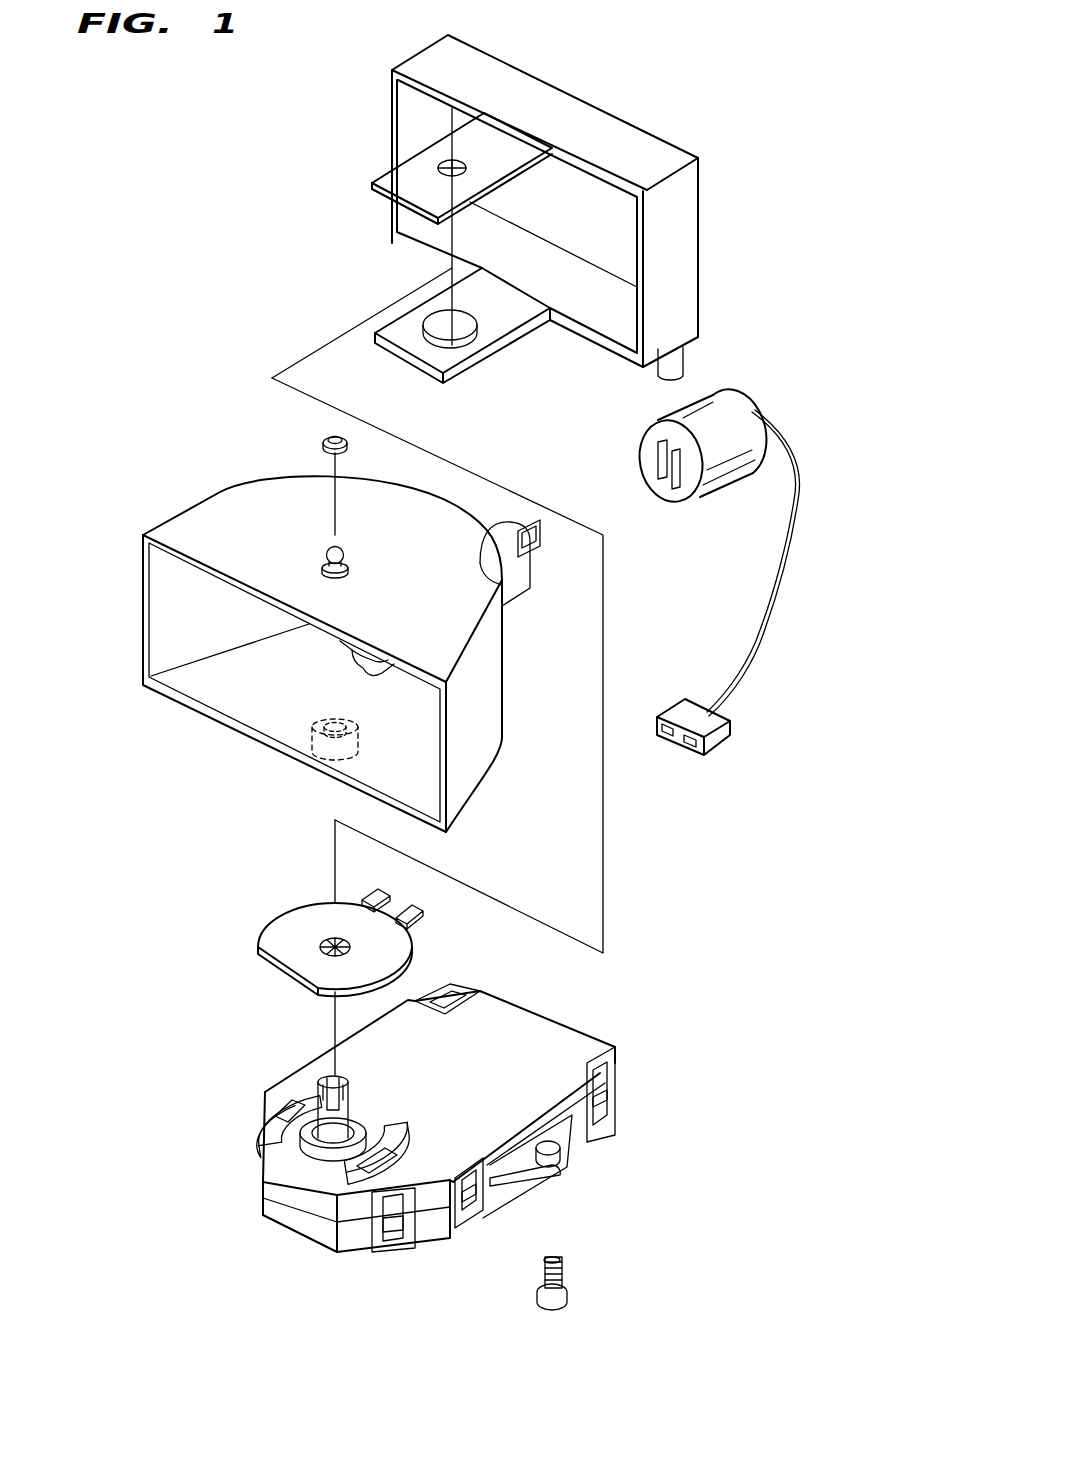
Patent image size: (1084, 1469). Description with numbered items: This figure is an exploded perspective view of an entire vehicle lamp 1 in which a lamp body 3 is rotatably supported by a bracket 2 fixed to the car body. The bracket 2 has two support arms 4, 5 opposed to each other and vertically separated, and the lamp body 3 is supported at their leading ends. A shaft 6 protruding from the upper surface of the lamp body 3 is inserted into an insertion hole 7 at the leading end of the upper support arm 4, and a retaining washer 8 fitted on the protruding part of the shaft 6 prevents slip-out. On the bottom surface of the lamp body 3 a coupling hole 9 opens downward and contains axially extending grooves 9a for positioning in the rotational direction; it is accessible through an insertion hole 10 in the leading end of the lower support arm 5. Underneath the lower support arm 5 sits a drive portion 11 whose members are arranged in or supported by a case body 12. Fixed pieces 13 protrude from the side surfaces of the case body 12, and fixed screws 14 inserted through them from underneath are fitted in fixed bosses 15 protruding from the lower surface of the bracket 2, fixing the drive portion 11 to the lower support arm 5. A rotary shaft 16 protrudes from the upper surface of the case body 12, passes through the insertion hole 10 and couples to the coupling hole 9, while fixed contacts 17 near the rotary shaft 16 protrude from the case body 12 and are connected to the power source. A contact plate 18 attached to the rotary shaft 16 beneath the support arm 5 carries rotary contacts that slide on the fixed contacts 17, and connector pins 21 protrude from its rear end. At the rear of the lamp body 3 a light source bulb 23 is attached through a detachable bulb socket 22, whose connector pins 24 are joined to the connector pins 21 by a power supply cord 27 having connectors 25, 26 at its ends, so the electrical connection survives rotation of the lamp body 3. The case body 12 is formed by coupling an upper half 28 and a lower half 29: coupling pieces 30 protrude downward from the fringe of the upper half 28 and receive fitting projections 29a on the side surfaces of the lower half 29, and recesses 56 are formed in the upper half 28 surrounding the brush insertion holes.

The vehicle lamp 1 is at (215, 254).
The bracket 2 is at (617, 130).
The lamp body 3 is at (190, 525).
The upper support arm 4 is at (375, 185).
The lower support arm 5 is at (385, 328).
The shaft 6 is at (345, 552).
The insertion hole 7 is at (463, 165).
The retaining washer 8 is at (322, 438).
The coupling hole 9 is at (300, 768).
The grooves 9a is at (320, 722).
The insertion hole 10 is at (463, 335).
The drive portion 11 is at (590, 1052).
The case body 12 is at (545, 1033).
The fixed pieces 13 is at (563, 1167).
The fixed screws 14 is at (568, 1267).
The fixed bosses 15 is at (692, 362).
The rotary shaft 16 is at (347, 1130).
The fixed contacts 17 is at (265, 1097).
The contact plate 18 is at (263, 927).
The connector pins 21 is at (413, 907).
The bulb socket 22 is at (500, 522).
The light source bulb 23 is at (375, 670).
The connector pins 24 is at (535, 525).
The connector 25 is at (707, 728).
The connector 26 is at (721, 451).
The power supply cord 27 is at (779, 610).
The upper half 28 is at (505, 1017).
The lower half 29 is at (305, 1227).
The fitting projections 29a is at (397, 1227).
The coupling pieces 30 is at (383, 1243).
The recesses 56 is at (397, 1137).